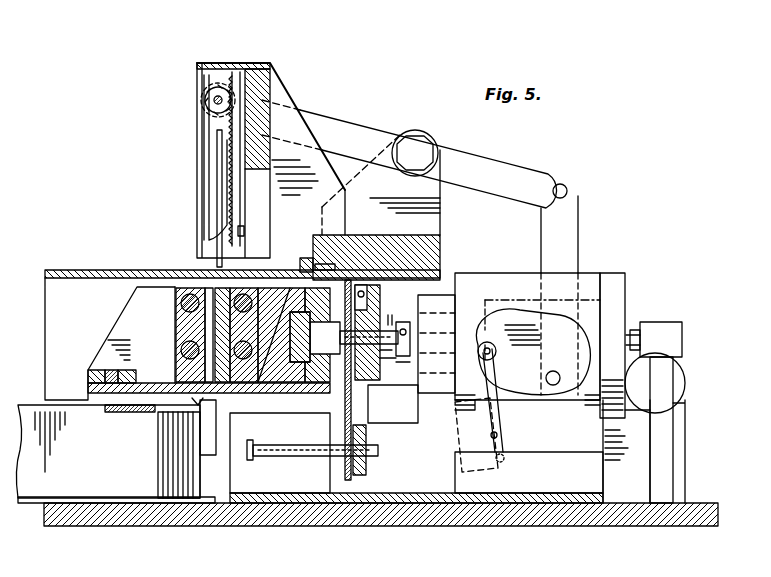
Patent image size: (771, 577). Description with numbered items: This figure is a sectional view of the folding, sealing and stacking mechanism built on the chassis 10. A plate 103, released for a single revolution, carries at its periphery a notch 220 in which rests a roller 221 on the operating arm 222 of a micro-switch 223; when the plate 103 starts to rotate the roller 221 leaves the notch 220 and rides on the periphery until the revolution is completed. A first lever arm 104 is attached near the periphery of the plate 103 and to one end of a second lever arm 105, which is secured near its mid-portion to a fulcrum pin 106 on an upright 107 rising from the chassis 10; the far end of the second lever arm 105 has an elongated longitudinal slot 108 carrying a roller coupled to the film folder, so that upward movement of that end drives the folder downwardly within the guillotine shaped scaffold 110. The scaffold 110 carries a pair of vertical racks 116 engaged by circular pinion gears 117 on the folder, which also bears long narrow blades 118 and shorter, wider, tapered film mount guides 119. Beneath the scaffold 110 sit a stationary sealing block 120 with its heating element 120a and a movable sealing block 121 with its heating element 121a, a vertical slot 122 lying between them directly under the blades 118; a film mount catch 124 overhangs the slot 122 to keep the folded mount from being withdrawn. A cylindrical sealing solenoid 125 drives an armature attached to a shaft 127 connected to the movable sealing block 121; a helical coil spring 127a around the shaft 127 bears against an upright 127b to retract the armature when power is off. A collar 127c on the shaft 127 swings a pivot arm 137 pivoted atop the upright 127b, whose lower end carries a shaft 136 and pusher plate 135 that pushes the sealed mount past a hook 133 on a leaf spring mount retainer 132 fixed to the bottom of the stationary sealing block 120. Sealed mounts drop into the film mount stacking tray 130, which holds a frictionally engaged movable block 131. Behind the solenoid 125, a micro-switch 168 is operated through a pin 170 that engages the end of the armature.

The chassis 10 is at (428, 526).
The plate 103 is at (562, 385).
The first lever arm 104 is at (564, 229).
The second lever arm 105 is at (503, 168).
The fulcrum pin 106 is at (418, 152).
The upright 107 is at (420, 232).
The elongated longitudinal slot 108 is at (355, 114).
The guillotine shaped scaffold 110 is at (256, 54).
The vertical racks 116 is at (244, 228).
The circular pinion gears 117 is at (205, 108).
The blades 118 is at (218, 215).
The film mount guides 119 is at (206, 183).
The stationary sealing block 120 is at (175, 291).
The heating element 120a is at (185, 340).
The movable sealing block 121 is at (255, 393).
The heating element 121a is at (268, 360).
The vertical slot 122 is at (226, 272).
The film mount catch 124 is at (185, 270).
The sealing solenoid 125 is at (616, 283).
The shaft 127 is at (410, 365).
The helical coil spring 127a is at (383, 318).
The upright 127b is at (445, 286).
The collar 127c is at (412, 396).
The film mount stacking tray 130 is at (35, 503).
The movable block 131 is at (155, 456).
The leaf spring mount retainer 132 is at (170, 335).
The hook 133 is at (211, 426).
The pusher plate 135 is at (254, 462).
The shaft 136 is at (372, 460).
The pivot arm 137 is at (368, 440).
The micro-switch 168 is at (683, 340).
The pin 170 is at (634, 330).
The notch 220 is at (510, 340).
The roller 221 is at (500, 355).
The operating arm 222 is at (503, 398).
The micro-switch 223 is at (498, 440).